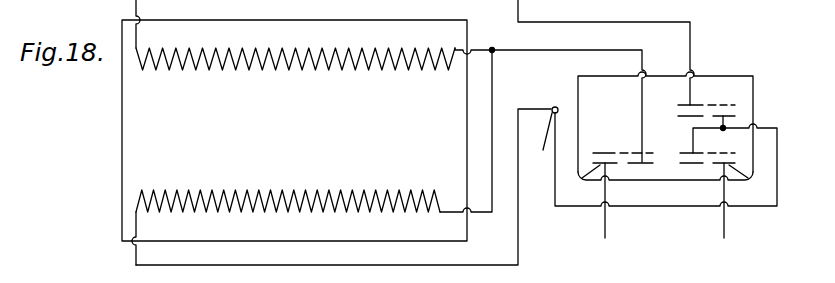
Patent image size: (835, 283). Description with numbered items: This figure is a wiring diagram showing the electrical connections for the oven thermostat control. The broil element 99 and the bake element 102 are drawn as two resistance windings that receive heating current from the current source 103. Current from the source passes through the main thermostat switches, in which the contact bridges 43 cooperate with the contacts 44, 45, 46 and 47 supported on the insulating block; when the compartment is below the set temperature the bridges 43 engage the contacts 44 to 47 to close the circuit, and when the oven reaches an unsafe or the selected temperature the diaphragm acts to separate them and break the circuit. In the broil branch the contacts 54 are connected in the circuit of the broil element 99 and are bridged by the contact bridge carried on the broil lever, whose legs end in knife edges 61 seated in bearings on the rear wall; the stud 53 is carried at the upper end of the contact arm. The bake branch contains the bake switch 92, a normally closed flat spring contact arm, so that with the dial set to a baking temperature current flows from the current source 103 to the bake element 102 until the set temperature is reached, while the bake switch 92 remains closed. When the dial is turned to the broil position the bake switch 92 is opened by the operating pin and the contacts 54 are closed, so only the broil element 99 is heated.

The broil element 99 is at (353, 68).
The bake element 102 is at (343, 196).
The knife edges 61 is at (638, 52).
The bake switch 92 is at (660, 156).
The stud 53 is at (712, 99).
The contacts 54 is at (681, 118).
The contact bridges 43 is at (614, 145).
The contact 44 is at (589, 200).
The contact 45 is at (648, 166).
The contact 46 is at (699, 166).
The contact 47 is at (737, 200).
The current source 103 is at (724, 226).